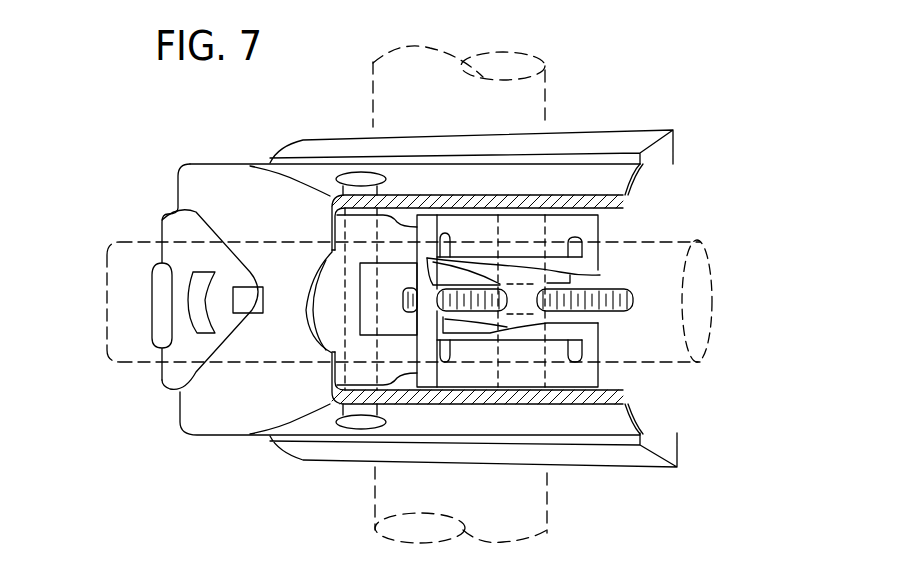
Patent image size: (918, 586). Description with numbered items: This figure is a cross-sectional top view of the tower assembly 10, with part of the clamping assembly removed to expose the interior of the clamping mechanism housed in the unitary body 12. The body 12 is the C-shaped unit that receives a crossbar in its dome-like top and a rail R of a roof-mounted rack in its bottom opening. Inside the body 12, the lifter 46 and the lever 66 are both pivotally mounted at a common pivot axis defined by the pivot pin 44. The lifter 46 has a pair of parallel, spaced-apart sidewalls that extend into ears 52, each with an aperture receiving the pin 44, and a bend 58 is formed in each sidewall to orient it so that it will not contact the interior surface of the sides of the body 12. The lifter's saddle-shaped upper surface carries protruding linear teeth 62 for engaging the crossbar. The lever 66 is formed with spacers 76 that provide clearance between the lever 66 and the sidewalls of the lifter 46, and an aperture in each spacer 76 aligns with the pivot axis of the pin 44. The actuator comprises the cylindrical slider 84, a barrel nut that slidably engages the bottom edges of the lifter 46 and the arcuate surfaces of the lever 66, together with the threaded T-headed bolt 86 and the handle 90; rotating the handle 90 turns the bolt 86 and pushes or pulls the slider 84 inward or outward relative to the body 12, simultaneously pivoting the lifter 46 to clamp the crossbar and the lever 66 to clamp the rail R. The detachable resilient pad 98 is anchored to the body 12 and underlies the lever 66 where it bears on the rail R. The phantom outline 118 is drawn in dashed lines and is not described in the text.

The tower assembly 10 is at (140, 171).
The unitary body 12 is at (220, 180).
The pivot pin 44 is at (360, 180).
The lifter 46 is at (593, 228).
The ears 52 is at (392, 378).
The bend 58 is at (405, 383).
The linear teeth 62 is at (515, 260).
The lever 66 is at (567, 278).
The spacers 76 is at (353, 373).
The slider 84 is at (528, 308).
The bolt 86 is at (633, 303).
The handle 90 is at (172, 373).
The pad 98 is at (670, 150).
The phantom ring 118 is at (712, 280).
The rails R is at (550, 107).